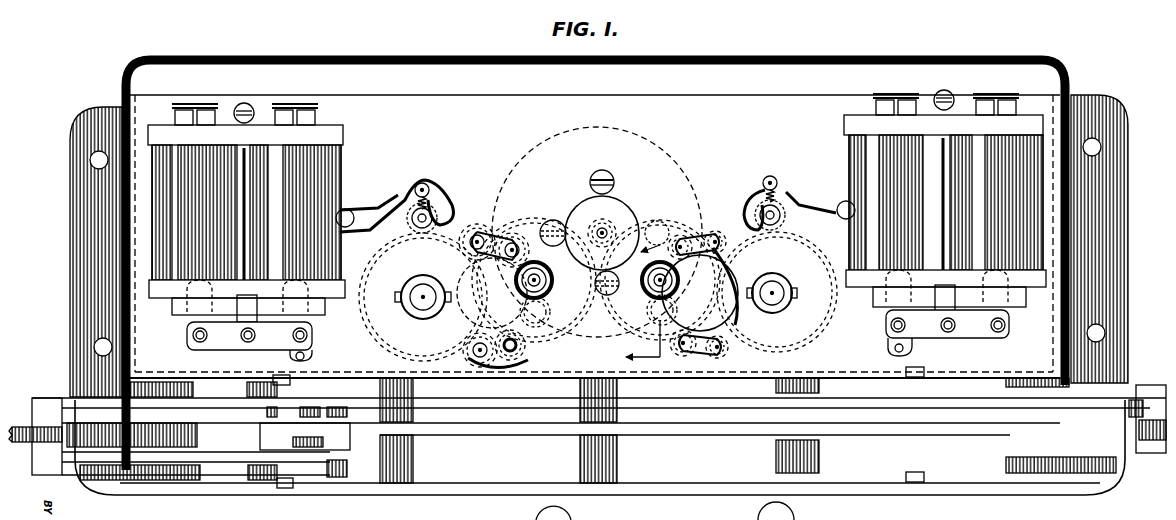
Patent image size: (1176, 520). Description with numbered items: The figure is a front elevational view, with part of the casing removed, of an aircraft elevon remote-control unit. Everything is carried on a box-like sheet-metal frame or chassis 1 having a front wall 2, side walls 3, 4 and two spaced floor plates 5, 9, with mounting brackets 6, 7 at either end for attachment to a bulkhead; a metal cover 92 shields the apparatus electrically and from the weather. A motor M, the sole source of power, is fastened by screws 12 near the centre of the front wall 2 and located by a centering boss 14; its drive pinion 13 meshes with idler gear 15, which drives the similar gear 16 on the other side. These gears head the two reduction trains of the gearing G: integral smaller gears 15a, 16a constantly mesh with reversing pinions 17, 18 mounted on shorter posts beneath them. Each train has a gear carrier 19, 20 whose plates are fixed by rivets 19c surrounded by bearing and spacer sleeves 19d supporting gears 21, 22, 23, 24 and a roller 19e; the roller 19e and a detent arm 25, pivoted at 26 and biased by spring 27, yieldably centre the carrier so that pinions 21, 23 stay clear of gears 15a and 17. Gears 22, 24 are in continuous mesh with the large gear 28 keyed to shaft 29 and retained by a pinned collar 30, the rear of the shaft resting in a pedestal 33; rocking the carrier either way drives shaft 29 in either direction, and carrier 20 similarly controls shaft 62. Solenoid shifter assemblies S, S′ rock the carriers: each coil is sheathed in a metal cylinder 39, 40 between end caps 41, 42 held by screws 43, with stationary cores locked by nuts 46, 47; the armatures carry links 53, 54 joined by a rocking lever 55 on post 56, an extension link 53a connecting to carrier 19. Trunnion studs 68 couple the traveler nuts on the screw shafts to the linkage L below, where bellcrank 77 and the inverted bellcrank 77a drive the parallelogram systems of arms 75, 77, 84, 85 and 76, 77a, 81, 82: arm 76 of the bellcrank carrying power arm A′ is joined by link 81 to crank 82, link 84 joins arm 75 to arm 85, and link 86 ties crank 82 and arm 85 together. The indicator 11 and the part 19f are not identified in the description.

The frame or chassis 1 is at (152, 96).
The front wall 2 is at (380, 105).
The side wall 3 is at (92, 112).
The side wall 4 is at (1102, 160).
The floor plate 5 is at (482, 305).
The mounting bracket 6 is at (72, 144).
The mounting bracket 7 is at (1105, 193).
The floor plate 9 is at (460, 487).
The section line 11 is at (640, 302).
The screws 12 is at (602, 170).
The drive pinion 13 is at (598, 226).
The centering boss 14 is at (613, 200).
The idler gear 15 is at (670, 218).
The smaller gear 15a is at (652, 222).
The gear 16 is at (527, 222).
The smaller gear 16a is at (554, 222).
The reversing pinion 17 is at (648, 312).
The reversing pinion 18 is at (535, 318).
The gear carrier 19 is at (838, 278).
The rivets 19c is at (720, 252).
The bearing and spacer sleeve 19d is at (879, 377).
The roller 19e is at (789, 160).
The lever link 19f is at (775, 186).
The gear carrier 20 is at (310, 327).
The pinion 21 is at (662, 240).
The gear 22 is at (714, 234).
The pinion 23 is at (676, 352).
The gear 24 is at (700, 345).
The detent arm 25 is at (791, 193).
The pivot 26 is at (840, 205).
The spring 27 is at (760, 200).
The large gear 28 is at (734, 234).
The shaft 29 is at (768, 303).
The pinned collar 30 is at (774, 303).
The pedestal 33 is at (760, 512).
The metal cylinder 39 is at (866, 157).
The metal cylinder 40 is at (1043, 137).
The end cap 41 is at (858, 127).
The end cap 42 is at (1040, 278).
The screws 43 is at (976, 290).
The nut 46 is at (887, 100).
The nut 47 is at (1004, 100).
The link 53 is at (923, 308).
The extension link 53a is at (903, 330).
The link 54 is at (1011, 315).
The rocking lever 55 is at (979, 332).
The post 56 is at (949, 310).
The shaft 62 is at (423, 300).
The trunnion studs 68 is at (803, 519).
The work arm 75 is at (1123, 433).
The work arm 76 is at (52, 435).
The bellcrank lever 77 is at (876, 403).
The bellcrank lever 77a is at (185, 402).
The link 81 is at (155, 462).
The crank 82 is at (247, 398).
The link 84 is at (984, 395).
The arm 85 is at (943, 385).
The link 86 is at (645, 427).
The metal cover 92 is at (293, 58).
The solenoid shifter assembly S is at (943, 148).
The solenoid shifter assembly S' is at (245, 156).
The motor M is at (620, 131).
The gearing G is at (490, 222).
The linkage system L is at (350, 462).
The power arm A' is at (33, 436).